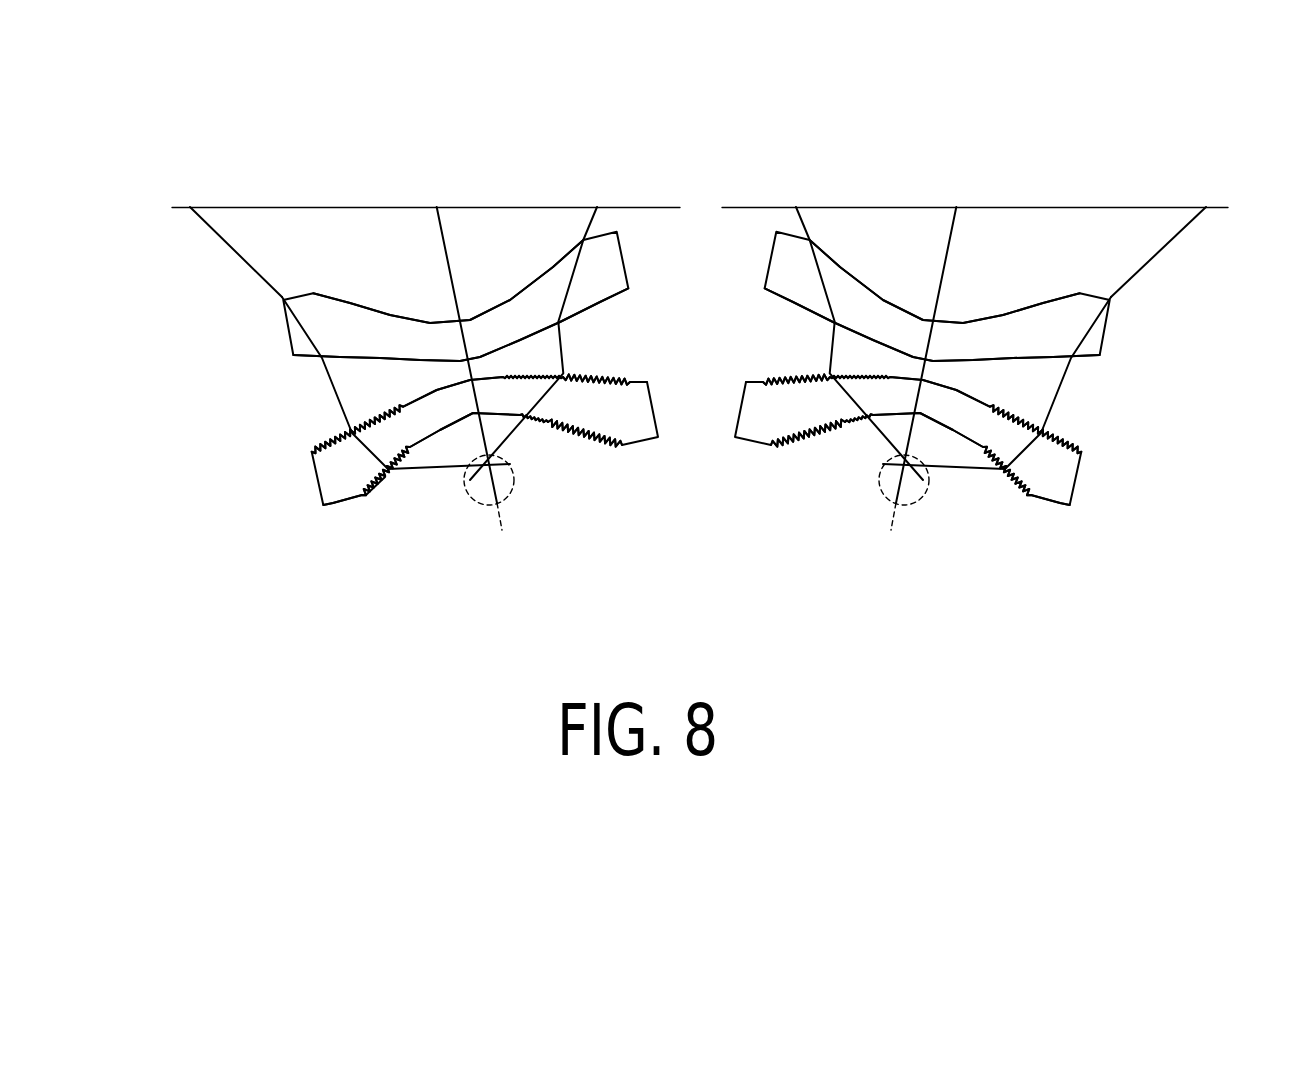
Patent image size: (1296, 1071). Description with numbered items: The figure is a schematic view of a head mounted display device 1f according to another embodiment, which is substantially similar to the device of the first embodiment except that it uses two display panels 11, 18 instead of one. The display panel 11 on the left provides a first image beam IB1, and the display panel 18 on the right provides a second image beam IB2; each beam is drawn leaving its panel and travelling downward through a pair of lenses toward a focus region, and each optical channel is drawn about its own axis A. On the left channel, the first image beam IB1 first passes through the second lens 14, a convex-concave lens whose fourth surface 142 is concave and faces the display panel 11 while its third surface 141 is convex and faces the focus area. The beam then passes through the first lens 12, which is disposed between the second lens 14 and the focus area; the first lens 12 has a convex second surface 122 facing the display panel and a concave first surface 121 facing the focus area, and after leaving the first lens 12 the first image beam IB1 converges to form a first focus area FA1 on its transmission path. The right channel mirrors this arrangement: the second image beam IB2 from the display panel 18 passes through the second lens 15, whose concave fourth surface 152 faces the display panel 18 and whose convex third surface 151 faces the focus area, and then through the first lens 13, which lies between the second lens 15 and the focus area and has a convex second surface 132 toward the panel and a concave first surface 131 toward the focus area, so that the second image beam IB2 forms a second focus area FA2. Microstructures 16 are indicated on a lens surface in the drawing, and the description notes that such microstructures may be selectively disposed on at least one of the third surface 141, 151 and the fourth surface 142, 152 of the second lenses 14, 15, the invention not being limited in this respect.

The head mounted display device 1f is at (1135, 110).
The display panel 11 is at (221, 207).
The display panel 18 is at (1173, 207).
The first image beam IB1 is at (252, 267).
The second image beam IB2 is at (1145, 267).
The optical axis A is at (437, 207).
The second lens 14 is at (184, 322).
The fourth surface 142 is at (274, 300).
The third surface 141 is at (301, 363).
The first lens 12 is at (184, 448).
The second surface 122 is at (304, 456).
The first surface 121 is at (334, 513).
The microstructures 16 is at (377, 487).
The second lens 15 is at (1213, 322).
The fourth surface 152 is at (1119, 300).
The third surface 151 is at (1092, 363).
The first lens 13 is at (1213, 448).
The second surface 132 is at (1089, 456).
The first surface 131 is at (1059, 513).
The first focus area FA1 is at (472, 500).
The second focus area FA2 is at (921, 500).